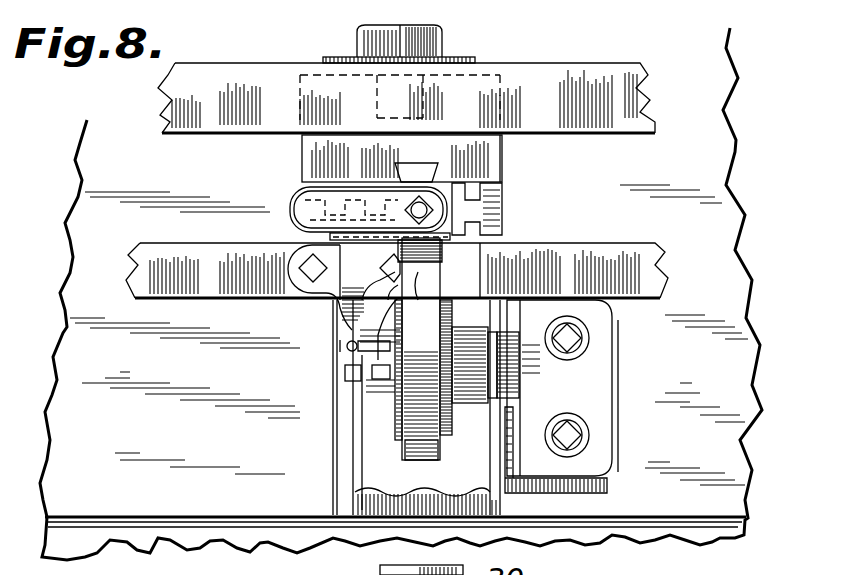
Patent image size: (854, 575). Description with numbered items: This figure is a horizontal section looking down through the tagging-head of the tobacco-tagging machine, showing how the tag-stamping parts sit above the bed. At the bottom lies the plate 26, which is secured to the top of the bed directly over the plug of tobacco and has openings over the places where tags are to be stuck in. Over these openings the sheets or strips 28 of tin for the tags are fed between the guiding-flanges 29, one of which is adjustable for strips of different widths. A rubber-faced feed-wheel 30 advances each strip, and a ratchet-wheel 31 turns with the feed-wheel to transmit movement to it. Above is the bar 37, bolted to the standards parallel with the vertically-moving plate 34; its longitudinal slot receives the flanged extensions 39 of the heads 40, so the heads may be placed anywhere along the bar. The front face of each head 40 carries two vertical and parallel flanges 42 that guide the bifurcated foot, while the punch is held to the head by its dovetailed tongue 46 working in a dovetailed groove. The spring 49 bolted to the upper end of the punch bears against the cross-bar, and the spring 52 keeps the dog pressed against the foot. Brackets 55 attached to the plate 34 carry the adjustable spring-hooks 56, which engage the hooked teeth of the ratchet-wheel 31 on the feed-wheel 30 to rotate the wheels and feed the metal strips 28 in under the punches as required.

The plate 26 is at (78, 336).
The sheets or strips 28 is at (425, 485).
The guiding-flanges 29 is at (498, 495).
The feed-wheels 30 is at (448, 423).
The ratchet-wheel 31 is at (385, 393).
The plate 34 is at (148, 272).
The bar 37 is at (176, 107).
The flanged extensions 39 is at (357, 38).
The heads 40 is at (477, 152).
The vertical and parallel flanges 42 is at (502, 210).
The dovetailed tongue 46 is at (416, 173).
The spring 49 is at (420, 349).
The spring 52 is at (298, 205).
The brackets 55 is at (340, 325).
The spring-hooks 56 is at (345, 350).